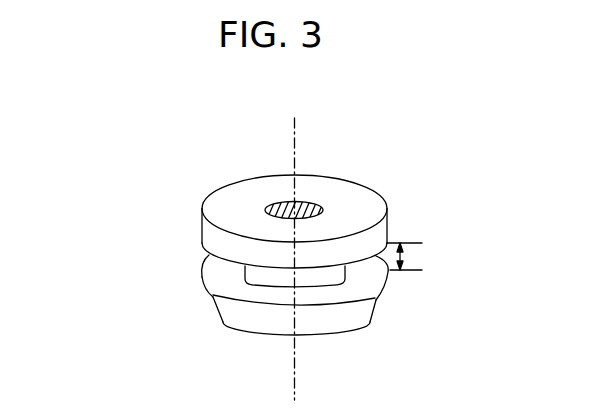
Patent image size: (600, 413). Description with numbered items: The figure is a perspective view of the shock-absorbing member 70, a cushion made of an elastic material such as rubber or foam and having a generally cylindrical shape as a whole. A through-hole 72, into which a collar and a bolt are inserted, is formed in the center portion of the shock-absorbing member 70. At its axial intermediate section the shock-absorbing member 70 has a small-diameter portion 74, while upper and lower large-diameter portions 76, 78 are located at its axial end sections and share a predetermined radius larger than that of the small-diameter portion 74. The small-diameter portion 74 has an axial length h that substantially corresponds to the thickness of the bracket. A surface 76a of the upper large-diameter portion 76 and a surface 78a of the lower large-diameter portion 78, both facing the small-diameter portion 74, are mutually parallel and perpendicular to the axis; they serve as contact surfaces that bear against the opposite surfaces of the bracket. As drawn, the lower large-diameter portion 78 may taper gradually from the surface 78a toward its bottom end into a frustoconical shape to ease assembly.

The shock-absorbing member 70 is at (146, 258).
The through-hole 72 is at (318, 204).
The small-diameter portion 74 is at (320, 278).
The upper large-diameter portion 76 is at (388, 216).
The surface of the upper large-diameter portion 76a is at (203, 262).
The lower large-diameter portion 78 is at (372, 300).
The surface of the lower large-diameter portion 78a is at (240, 286).
The axial length h is at (404, 257).